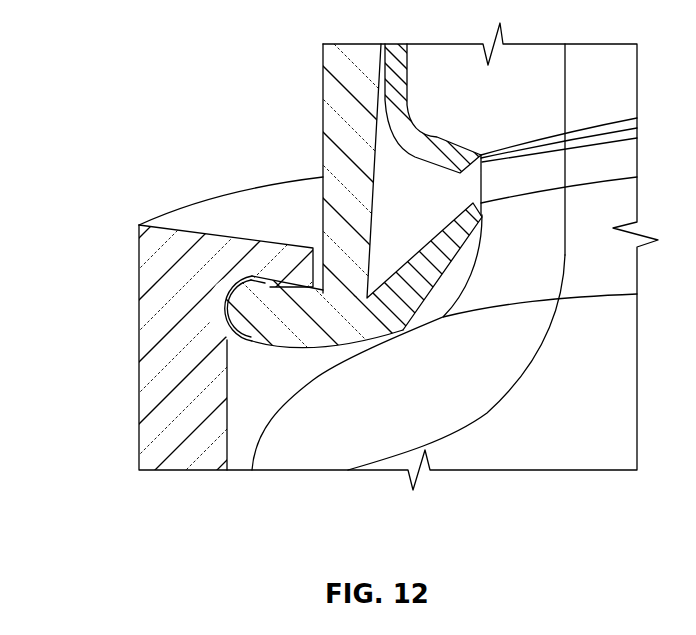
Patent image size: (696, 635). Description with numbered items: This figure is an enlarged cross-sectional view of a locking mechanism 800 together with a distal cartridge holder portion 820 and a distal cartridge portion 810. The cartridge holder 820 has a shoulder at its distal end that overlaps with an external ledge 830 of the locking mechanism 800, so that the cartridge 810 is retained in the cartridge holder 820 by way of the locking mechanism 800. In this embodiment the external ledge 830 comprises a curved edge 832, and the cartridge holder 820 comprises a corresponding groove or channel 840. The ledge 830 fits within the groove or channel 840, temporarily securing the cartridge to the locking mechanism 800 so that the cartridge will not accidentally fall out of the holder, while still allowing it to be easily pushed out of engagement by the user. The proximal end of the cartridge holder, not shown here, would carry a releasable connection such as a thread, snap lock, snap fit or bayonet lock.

The locking mechanism 800 is at (305, 92).
The distal cartridge portion 810 is at (330, 440).
The distal cartridge holder portion 820 is at (183, 435).
The external ledge 830 is at (283, 307).
The curved edge 832 is at (212, 295).
The groove or channel 840 is at (208, 317).